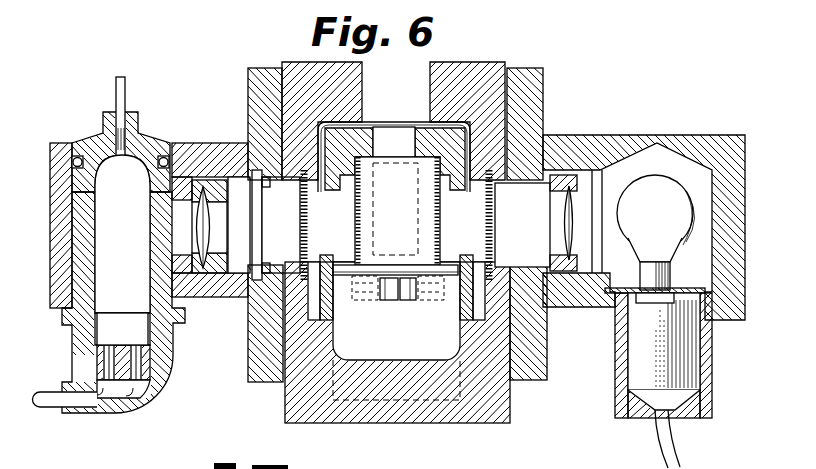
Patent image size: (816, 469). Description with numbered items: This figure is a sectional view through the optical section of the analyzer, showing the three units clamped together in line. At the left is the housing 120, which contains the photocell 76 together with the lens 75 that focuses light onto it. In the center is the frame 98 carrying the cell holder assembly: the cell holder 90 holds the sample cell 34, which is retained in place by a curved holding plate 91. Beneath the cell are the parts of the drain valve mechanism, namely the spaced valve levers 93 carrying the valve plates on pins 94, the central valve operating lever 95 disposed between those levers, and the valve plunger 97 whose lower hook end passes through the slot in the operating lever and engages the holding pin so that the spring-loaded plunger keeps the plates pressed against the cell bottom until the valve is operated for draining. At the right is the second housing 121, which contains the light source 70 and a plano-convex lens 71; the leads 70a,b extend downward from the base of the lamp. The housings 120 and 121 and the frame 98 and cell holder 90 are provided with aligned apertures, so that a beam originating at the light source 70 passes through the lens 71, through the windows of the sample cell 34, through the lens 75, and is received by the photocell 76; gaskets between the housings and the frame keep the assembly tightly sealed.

The housing 120 is at (143, 142).
The photocell 76 is at (140, 216).
The lens 75 is at (202, 236).
The frame 98 is at (486, 80).
The cell holder 90 is at (430, 135).
The curved holding plate 91 is at (378, 213).
The sample cell 34 is at (437, 232).
The pin 94 is at (356, 296).
The valve lever 93 is at (372, 302).
The valve operating lever 95 is at (386, 302).
The valve plunger 97 is at (404, 302).
The housing 121 is at (610, 140).
The plano-convex lens 71 is at (571, 206).
The light source 70 is at (674, 216).
The lamp leads 70a,b is at (660, 426).